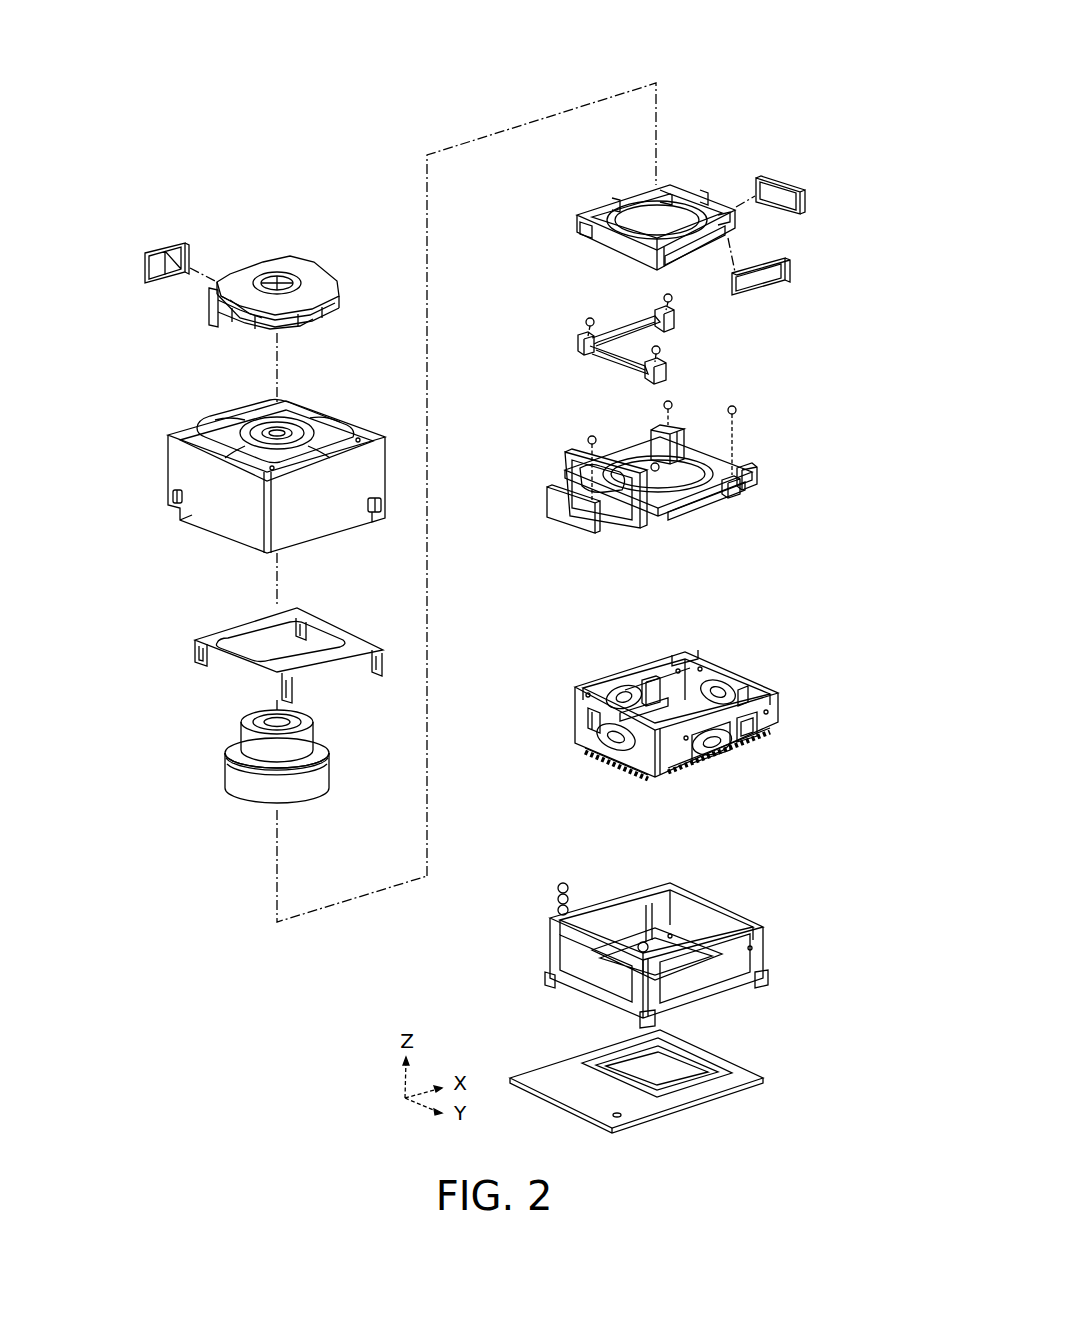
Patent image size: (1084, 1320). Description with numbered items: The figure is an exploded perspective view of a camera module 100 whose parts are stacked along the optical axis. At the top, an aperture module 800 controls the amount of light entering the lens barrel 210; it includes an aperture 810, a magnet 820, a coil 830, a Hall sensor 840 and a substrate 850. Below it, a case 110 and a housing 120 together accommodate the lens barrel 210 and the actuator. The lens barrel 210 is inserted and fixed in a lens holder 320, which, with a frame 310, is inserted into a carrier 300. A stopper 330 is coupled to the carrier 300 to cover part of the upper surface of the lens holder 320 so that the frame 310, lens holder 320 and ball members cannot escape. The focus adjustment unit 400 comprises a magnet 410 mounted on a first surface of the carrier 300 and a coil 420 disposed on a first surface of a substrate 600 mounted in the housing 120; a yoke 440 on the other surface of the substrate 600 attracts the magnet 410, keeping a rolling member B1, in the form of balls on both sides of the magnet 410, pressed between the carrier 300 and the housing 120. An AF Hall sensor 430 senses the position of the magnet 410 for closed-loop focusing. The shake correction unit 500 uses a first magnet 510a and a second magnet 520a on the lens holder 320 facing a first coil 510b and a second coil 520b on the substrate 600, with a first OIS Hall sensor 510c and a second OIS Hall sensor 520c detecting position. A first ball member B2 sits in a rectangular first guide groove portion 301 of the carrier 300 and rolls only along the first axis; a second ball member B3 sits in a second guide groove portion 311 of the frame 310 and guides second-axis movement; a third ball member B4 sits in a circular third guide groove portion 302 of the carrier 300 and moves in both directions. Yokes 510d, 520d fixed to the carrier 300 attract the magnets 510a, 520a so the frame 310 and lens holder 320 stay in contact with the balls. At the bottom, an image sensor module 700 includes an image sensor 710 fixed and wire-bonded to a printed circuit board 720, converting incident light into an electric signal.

The camera module 100 is at (478, 50).
The case 110 is at (172, 456).
The housing 120 is at (548, 940).
The lens barrel 210 is at (225, 777).
The carrier 300 is at (705, 527).
The first guide groove portion 301 is at (682, 432).
The third guide groove portion 302 is at (742, 487).
The frame 310 is at (574, 346).
The second guide groove portion 311 is at (580, 334).
The lens holder 320 is at (576, 228).
The stopper 330 is at (205, 634).
The focus adjustment unit 400 is at (536, 501).
The magnet 410 is at (565, 513).
The coil 420 is at (628, 755).
The AF Hall sensor 430 is at (582, 729).
The yoke 440 is at (636, 776).
The shake correction unit 500 is at (846, 258).
The first magnet 510a is at (790, 276).
The first coil 510b is at (722, 772).
The first OIS Hall sensor 510c is at (758, 742).
The yoke 510d is at (712, 505).
The second magnet 520a is at (790, 174).
The second coil 520b is at (727, 678).
The second OIS Hall sensor 520c is at (752, 695).
The yoke 520d is at (760, 470).
The substrate 600 is at (776, 724).
The image sensor module 700 is at (822, 1080).
The image sensor 710 is at (708, 1080).
The printed circuit board 720 is at (705, 1110).
The aperture module 800 is at (181, 301).
The aperture 810 is at (302, 268).
The magnet 820 is at (143, 268).
The coil 830 is at (614, 676).
The Hall sensor 840 is at (655, 672).
The substrate 850 is at (212, 322).
The rolling member B1 is at (643, 942).
The first ball member B2 is at (588, 436).
The second ball member B3 is at (589, 318).
The third ball member B4 is at (736, 409).